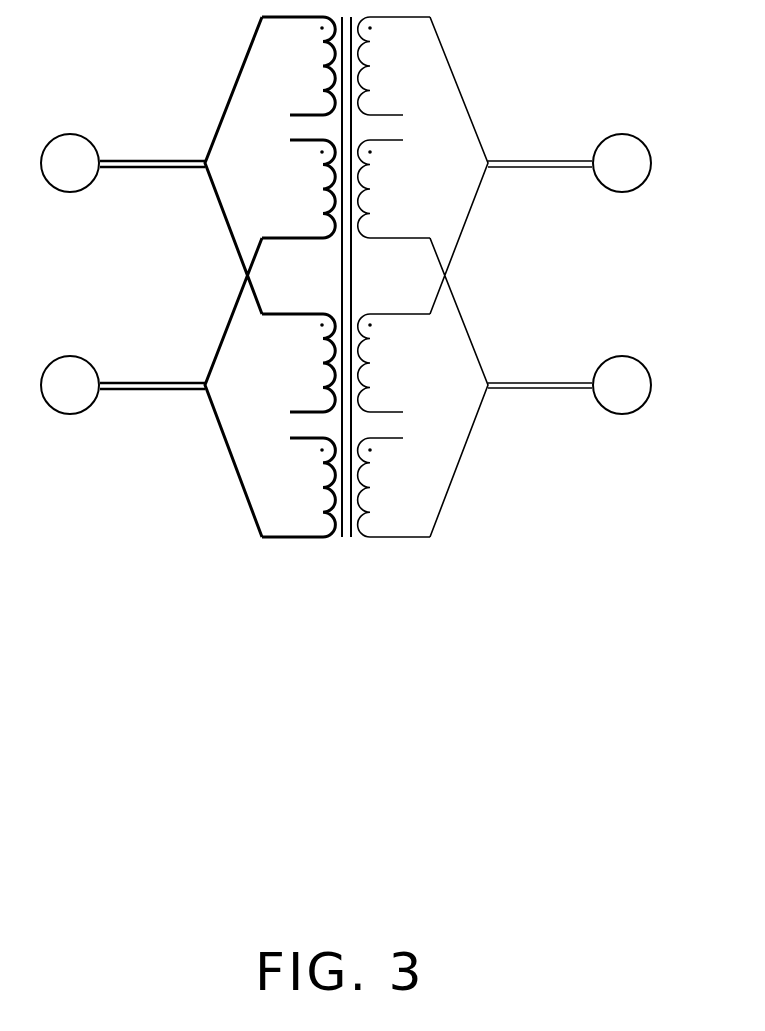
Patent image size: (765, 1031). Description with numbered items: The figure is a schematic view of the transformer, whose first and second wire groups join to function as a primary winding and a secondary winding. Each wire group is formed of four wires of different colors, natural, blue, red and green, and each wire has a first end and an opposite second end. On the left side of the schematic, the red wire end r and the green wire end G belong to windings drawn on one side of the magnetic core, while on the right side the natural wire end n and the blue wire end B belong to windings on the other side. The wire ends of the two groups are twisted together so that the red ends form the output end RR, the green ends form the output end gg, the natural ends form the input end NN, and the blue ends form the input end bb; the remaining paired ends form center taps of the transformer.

The output end RR is at (123, 163).
The output end gg is at (123, 385).
The input end NN is at (569, 163).
The input end bb is at (569, 385).
The red wire end r is at (294, 250).
The green wire end G is at (291, 300).
The natural wire end n is at (403, 250).
The blue wire end B is at (404, 300).